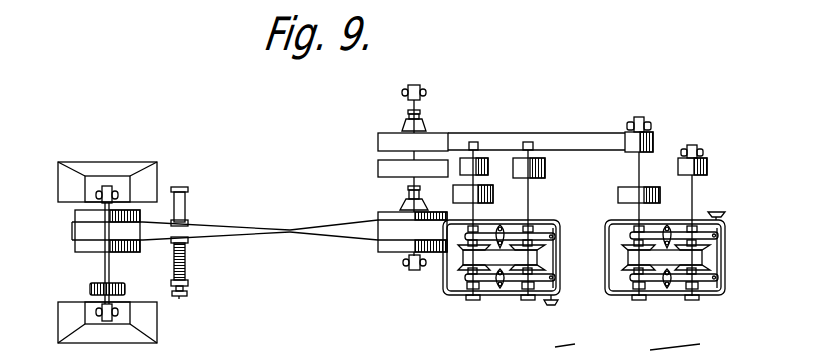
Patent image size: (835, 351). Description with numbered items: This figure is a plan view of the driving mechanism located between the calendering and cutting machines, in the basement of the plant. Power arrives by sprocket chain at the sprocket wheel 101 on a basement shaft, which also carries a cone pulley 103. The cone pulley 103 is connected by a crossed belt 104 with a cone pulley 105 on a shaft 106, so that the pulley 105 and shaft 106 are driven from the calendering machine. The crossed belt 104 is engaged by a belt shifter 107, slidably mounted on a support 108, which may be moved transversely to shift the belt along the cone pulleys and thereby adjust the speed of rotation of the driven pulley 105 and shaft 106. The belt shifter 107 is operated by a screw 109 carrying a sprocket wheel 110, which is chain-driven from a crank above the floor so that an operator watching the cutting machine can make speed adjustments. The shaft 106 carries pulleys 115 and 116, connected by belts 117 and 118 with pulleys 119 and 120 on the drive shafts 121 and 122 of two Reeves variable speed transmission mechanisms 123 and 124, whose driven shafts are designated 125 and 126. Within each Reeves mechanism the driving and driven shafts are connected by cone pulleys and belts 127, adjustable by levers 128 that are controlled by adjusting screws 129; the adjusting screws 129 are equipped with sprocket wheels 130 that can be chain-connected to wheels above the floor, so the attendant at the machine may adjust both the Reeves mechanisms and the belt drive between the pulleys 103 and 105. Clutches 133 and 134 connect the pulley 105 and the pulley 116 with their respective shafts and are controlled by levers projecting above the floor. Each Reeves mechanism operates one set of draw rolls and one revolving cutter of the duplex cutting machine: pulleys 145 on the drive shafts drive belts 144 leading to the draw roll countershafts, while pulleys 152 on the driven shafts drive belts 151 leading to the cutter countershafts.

The sprocket wheel 101 is at (116, 283).
The cone pulley 103 is at (80, 245).
The crossed belt 104 is at (288, 236).
The cone pulley 105 is at (390, 248).
The shaft 106 is at (416, 184).
The belt shifter 107 is at (188, 237).
The support 108 is at (188, 192).
The screw 109 is at (189, 268).
The sprocket wheel 110 is at (185, 298).
The pulley 115 is at (380, 176).
The pulley 116 is at (392, 133).
The belt 117 is at (450, 160).
The belt 118 is at (558, 146).
The pulley 119 is at (479, 160).
The pulley 120 is at (654, 133).
The drive shaft 121 is at (493, 180).
The drive shaft 122 is at (641, 161).
The Reeves variable speed transmission mechanism 123 is at (501, 285).
The Reeves variable speed transmission mechanism 124 is at (665, 281).
The driven shaft 125 is at (538, 200).
The driven shaft 126 is at (696, 178).
The cone pulleys and belts 127 is at (465, 258).
The lever 128 is at (520, 278).
The adjusting screw 129 is at (556, 258).
The sprocket wheel 130 is at (557, 301).
The clutch 133 is at (398, 200).
The clutch 134 is at (424, 114).
The belt 144 is at (597, 207).
The pulley 145 is at (493, 196).
The belt 151 is at (708, 168).
The pulley 152 is at (546, 166).